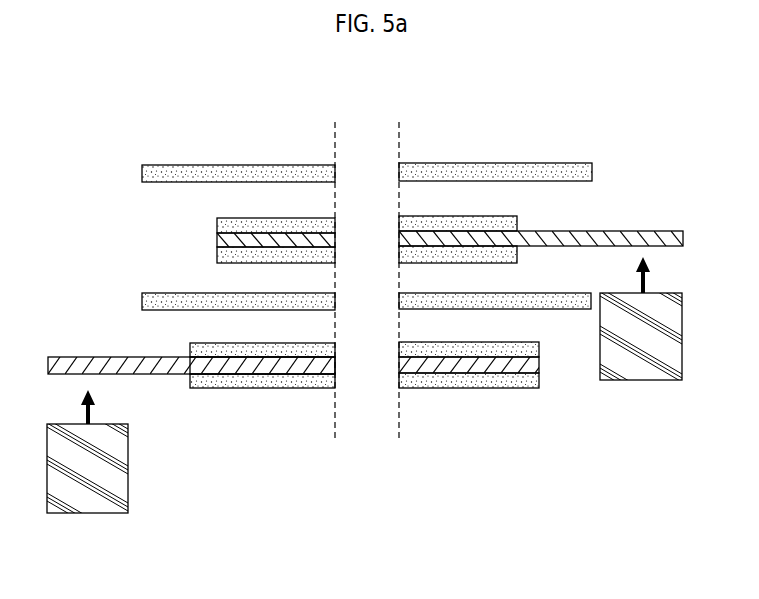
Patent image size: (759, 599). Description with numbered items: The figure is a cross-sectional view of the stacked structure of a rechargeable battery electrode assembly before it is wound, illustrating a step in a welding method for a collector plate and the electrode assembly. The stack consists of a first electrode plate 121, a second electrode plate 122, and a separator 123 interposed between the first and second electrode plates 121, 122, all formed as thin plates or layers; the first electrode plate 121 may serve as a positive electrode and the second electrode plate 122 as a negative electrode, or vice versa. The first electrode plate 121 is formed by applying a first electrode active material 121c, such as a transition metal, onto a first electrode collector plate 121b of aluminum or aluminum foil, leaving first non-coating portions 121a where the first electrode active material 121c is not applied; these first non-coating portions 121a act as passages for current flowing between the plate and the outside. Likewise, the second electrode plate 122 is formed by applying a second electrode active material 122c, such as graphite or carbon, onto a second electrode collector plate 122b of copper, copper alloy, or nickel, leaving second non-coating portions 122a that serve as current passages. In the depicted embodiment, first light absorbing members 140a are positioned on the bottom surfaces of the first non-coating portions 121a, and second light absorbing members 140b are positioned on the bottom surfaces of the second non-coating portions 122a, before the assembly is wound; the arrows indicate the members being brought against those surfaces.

The first electrode plate 121 is at (534, 397).
The first non-coating portions 121a is at (166, 375).
The first electrode collector plate 121b is at (305, 366).
The first electrode active material 121c is at (212, 358).
The second electrode plate 122 is at (208, 240).
The second non-coating portions 122a is at (638, 238).
The second electrode collector plate 122b is at (480, 238).
The second electrode active material 122c is at (435, 222).
The separator 123 is at (150, 300).
The first light absorbing members 140a is at (83, 513).
The second light absorbing members 140b is at (643, 380).